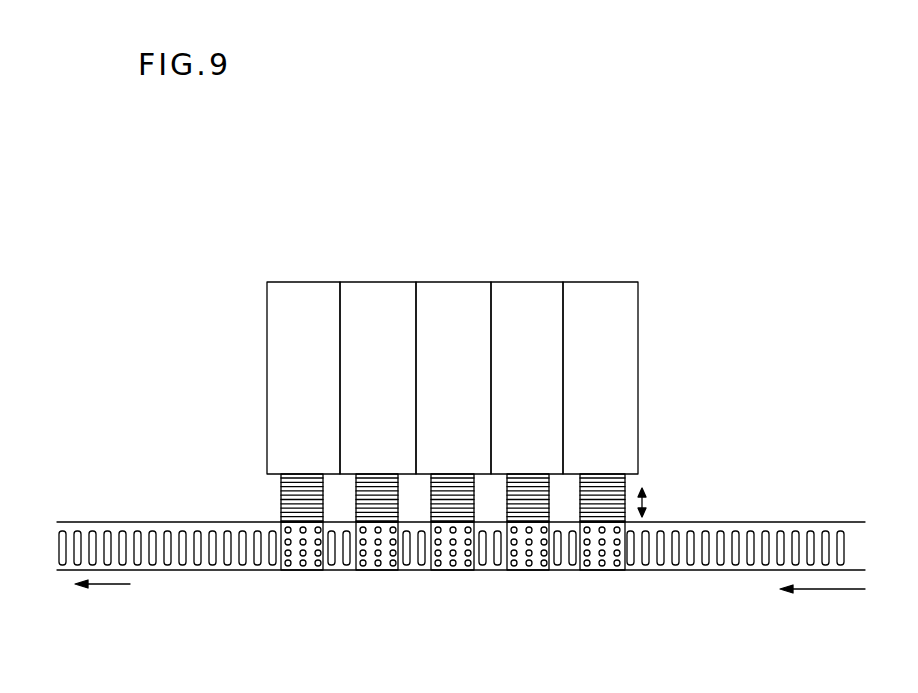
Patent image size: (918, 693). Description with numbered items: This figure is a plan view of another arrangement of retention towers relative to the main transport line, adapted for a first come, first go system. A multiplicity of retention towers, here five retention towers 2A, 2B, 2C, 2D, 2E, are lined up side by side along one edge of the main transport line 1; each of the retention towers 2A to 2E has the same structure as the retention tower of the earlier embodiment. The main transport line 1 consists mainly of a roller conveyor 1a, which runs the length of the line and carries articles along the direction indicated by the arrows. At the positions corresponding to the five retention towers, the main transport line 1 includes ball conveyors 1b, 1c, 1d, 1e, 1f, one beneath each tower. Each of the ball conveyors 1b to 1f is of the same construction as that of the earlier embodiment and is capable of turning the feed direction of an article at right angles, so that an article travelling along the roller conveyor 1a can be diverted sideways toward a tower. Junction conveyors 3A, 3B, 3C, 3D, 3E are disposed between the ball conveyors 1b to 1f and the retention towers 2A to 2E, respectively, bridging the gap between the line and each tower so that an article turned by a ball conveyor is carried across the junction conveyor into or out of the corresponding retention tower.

The main transport line 1 is at (704, 578).
The roller conveyor 1a is at (722, 538).
The ball conveyor 1b is at (302, 552).
The ball conveyor 1c is at (376, 565).
The ball conveyor 1d is at (453, 565).
The ball conveyor 1e is at (527, 560).
The ball conveyor 1f is at (608, 560).
The retention tower 2A is at (308, 287).
The retention tower 2B is at (383, 287).
The retention tower 2C is at (453, 287).
The retention tower 2D is at (533, 287).
The retention tower 2E is at (597, 287).
The junction conveyor 3A is at (281, 490).
The junction conveyor 3B is at (362, 503).
The junction conveyor 3C is at (442, 505).
The junction conveyor 3D is at (522, 503).
The junction conveyor 3E is at (597, 503).